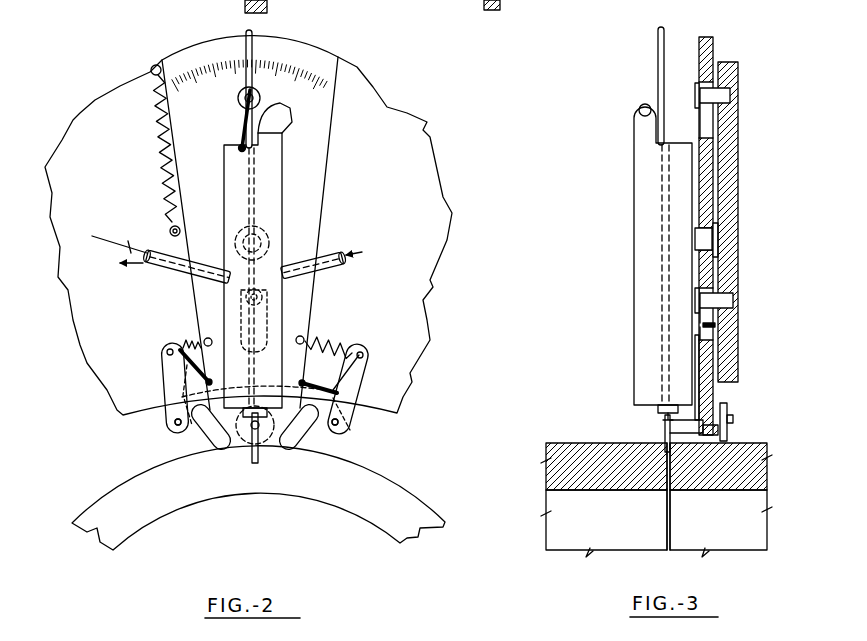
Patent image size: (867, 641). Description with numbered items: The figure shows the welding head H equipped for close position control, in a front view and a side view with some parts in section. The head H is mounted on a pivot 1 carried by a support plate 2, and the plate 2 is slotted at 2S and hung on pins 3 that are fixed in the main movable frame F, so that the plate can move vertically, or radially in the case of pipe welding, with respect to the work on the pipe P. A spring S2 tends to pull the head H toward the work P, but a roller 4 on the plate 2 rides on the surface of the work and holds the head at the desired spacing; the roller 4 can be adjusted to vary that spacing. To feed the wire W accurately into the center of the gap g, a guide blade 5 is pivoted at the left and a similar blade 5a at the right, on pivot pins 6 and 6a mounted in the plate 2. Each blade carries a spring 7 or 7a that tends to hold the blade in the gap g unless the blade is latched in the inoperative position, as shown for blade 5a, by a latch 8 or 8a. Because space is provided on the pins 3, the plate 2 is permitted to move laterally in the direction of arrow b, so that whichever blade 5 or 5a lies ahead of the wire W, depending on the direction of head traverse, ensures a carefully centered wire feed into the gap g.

In FIG. 2, the support plate 2 is at (330, 132).
In FIG. 3, the support plate 2 is at (713, 45).
In FIG. 2, the slot 2S is at (256, 90).
In FIG. 3, the slot 2S is at (707, 117).
In FIG. 2, the pins 3 is at (238, 100).
In FIG. 3, the pins 3 is at (697, 92).
In FIG. 2, the main movable frame F is at (425, 138).
In FIG. 3, the main movable frame F is at (738, 130).
In FIG. 2, the spring S2 is at (160, 150).
In FIG. 2, the wire W is at (246, 172).
In FIG. 3, the wire W is at (657, 62).
In FIG. 2, the welding head H is at (283, 172).
In FIG. 3, the welding head H is at (634, 190).
In FIG. 2, the pivot 1 is at (262, 238).
In FIG. 2, the roller 4 is at (270, 448).
In FIG. 3, the roller 4 is at (728, 408).
In FIG. 2, the guide blade 5 is at (205, 443).
In FIG. 3, the guide blade 5 is at (664, 432).
In FIG. 2, the guide blade 5a is at (317, 441).
In FIG. 2, the pivot pin 6 is at (172, 428).
In FIG. 2, the pivot pin 6a is at (345, 425).
In FIG. 2, the spring 7 is at (196, 340).
In FIG. 2, the spring 7a is at (326, 338).
In FIG. 2, the latch 8 is at (168, 372).
In FIG. 2, the latch 8a is at (340, 390).
In FIG. 2, the pipe P is at (388, 490).
In FIG. 3, the pipe P is at (581, 443).
In FIG. 3, the arrow b is at (718, 327).
In FIG. 3, the gap g is at (672, 505).